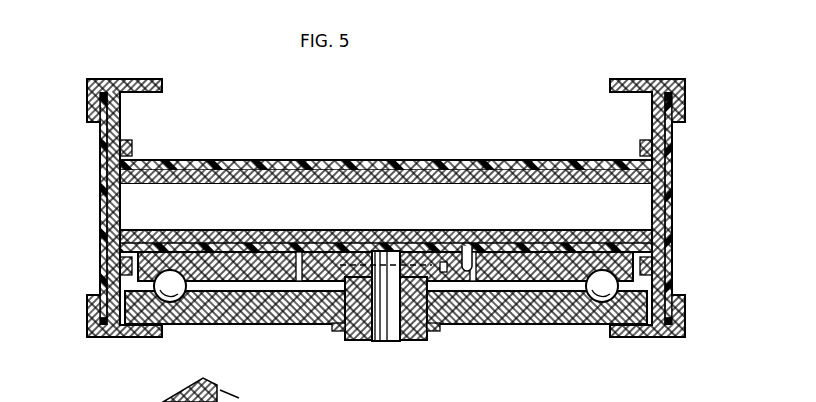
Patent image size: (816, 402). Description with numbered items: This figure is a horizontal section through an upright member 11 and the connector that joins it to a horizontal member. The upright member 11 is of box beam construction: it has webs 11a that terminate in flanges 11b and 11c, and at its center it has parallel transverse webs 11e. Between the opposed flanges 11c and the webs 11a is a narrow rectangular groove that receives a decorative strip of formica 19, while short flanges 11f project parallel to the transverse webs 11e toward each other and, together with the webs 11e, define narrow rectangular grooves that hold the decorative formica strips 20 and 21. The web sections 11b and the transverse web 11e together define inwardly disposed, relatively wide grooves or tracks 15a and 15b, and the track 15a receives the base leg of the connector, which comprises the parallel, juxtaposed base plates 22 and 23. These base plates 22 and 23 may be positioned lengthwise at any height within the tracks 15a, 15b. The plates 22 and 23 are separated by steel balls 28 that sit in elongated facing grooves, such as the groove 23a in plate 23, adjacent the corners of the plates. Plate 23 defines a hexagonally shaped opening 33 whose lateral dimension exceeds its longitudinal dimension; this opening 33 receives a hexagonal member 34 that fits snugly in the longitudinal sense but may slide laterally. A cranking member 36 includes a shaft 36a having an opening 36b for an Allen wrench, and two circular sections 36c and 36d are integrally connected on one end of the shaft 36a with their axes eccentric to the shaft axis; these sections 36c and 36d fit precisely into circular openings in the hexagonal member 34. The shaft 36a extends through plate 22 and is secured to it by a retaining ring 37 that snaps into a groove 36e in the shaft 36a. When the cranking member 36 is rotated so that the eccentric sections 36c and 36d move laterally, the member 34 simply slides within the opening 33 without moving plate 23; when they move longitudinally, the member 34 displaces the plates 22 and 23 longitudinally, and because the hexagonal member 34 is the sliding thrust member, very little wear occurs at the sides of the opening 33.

The upright member 11 is at (691, 88).
The web 11a is at (113, 203).
The flange 11b is at (143, 80).
The flange 11c is at (90, 105).
The transverse web 11e is at (405, 183).
The short flange 11f is at (133, 150).
The track 15a is at (118, 333).
The track 15b is at (122, 110).
The formica strip 19 is at (100, 158).
The formica strip 20 is at (273, 164).
The formica strip 21 is at (244, 251).
The base plate 22 is at (247, 312).
The base plate 23 is at (215, 265).
The elongated groove 23a is at (597, 270).
The steel ball 28 is at (168, 301).
The hexagonal opening 33 is at (468, 252).
The hexagonal member 34 is at (443, 262).
The cranking member 36 is at (414, 345).
The shaft 36a is at (440, 300).
The opening 36b is at (373, 342).
The circular section 36c is at (324, 292).
The circular section 36d is at (303, 268).
The groove 36e is at (349, 333).
The retaining ring 37 is at (426, 333).